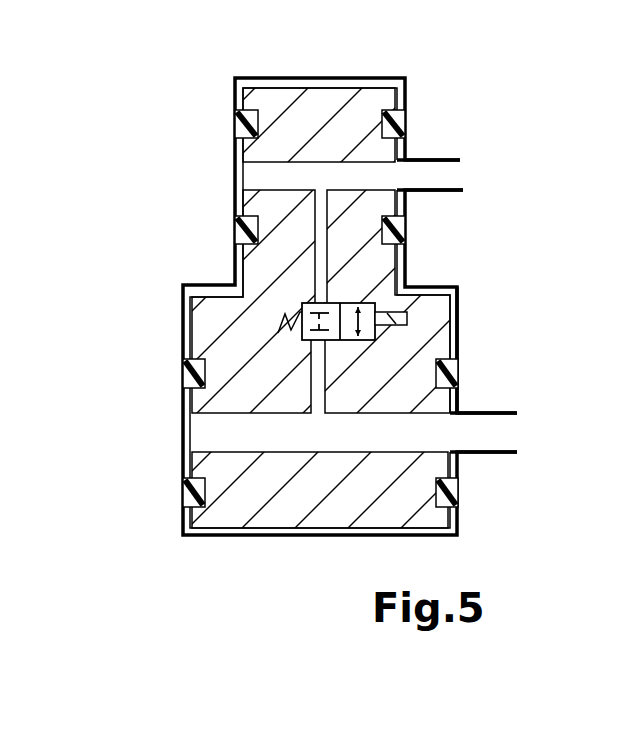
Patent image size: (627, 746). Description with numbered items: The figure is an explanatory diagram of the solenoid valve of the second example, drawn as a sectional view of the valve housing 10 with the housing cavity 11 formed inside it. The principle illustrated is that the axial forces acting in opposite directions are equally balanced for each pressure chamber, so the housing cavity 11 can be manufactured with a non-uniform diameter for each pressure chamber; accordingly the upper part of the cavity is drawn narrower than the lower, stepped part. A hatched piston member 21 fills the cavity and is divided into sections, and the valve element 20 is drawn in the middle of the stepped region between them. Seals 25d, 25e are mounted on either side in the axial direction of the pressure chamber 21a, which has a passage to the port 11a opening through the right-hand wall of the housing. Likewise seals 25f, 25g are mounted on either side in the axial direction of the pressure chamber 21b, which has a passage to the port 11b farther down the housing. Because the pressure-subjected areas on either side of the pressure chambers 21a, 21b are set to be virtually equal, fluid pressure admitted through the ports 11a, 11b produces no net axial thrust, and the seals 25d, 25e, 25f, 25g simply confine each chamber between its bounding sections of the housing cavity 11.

The cylinder housing 10 is at (372, 78).
The housing cavity 11 is at (447, 302).
The port 11a is at (438, 172).
The port 11b is at (484, 428).
The valve 20 is at (387, 330).
The piston 21 is at (308, 103).
The pressure chamber 21a is at (243, 183).
The pressure chamber 21b is at (190, 442).
The seal 25d is at (405, 117).
The seal 25e is at (403, 222).
The seal 25f is at (458, 372).
The seal 25g is at (458, 495).